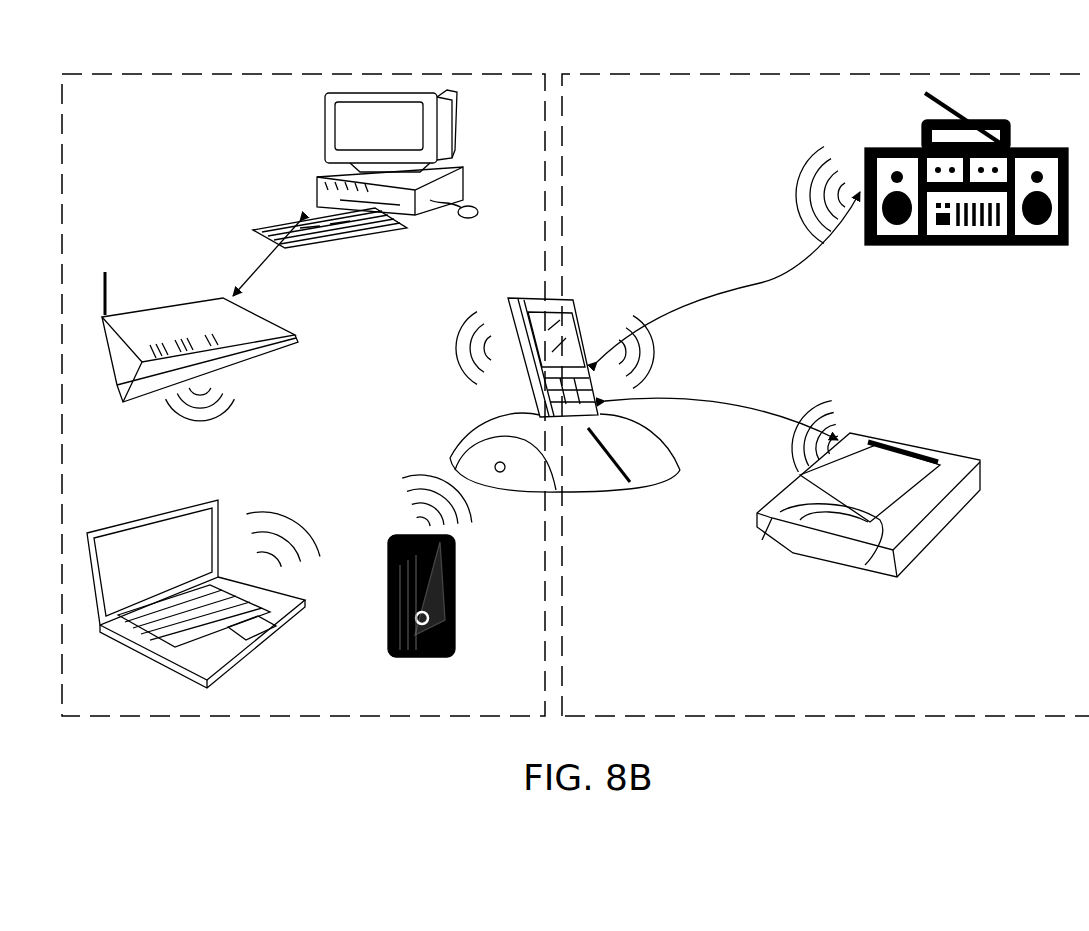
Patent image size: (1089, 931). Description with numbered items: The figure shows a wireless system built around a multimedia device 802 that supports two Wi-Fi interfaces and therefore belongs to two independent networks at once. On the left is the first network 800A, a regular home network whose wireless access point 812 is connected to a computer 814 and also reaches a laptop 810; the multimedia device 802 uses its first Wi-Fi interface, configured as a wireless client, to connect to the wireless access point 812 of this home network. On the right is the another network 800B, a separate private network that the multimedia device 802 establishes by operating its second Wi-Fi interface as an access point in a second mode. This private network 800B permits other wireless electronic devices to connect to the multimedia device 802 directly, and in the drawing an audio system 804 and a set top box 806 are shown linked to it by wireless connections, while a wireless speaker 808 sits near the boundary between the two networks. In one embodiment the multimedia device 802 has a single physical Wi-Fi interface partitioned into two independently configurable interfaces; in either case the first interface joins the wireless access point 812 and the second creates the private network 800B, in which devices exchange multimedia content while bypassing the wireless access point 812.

The first network 800A is at (291, 68).
The another network 800B is at (825, 68).
The multimedia device 802 is at (560, 300).
The audio system 804 is at (988, 246).
The set top box 806 is at (928, 447).
The wireless speaker 808 is at (430, 658).
The laptop computer 810 is at (153, 512).
The wireless access point 812 is at (130, 314).
The desktop computer 814 is at (330, 140).